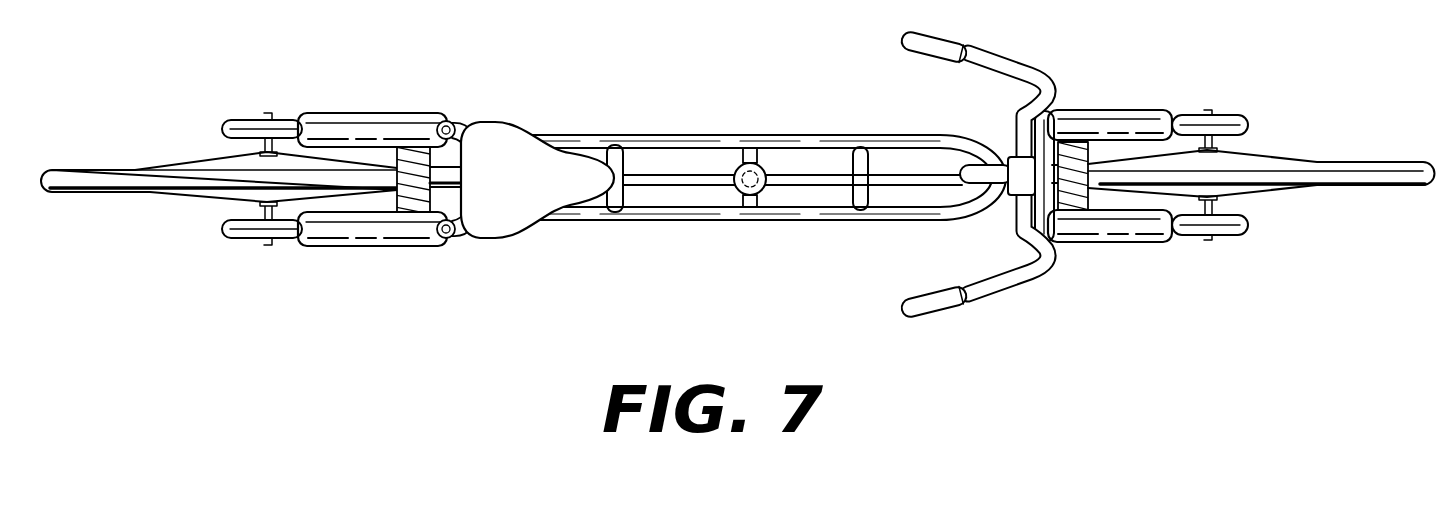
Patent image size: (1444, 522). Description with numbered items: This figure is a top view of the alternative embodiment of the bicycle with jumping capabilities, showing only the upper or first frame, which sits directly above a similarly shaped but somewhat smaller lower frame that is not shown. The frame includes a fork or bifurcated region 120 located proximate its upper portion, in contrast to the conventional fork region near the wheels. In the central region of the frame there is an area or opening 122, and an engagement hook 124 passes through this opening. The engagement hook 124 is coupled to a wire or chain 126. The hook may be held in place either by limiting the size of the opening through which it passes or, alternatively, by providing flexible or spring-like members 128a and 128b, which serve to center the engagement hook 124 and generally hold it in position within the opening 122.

The fork or bifurcated region 120 is at (670, 138).
The area or opening 122 is at (839, 160).
The engagement hook 124 is at (735, 165).
The wire or chain 126 is at (932, 176).
The flexible or spring-like member 128a is at (757, 152).
The flexible or spring-like member 128b is at (760, 200).